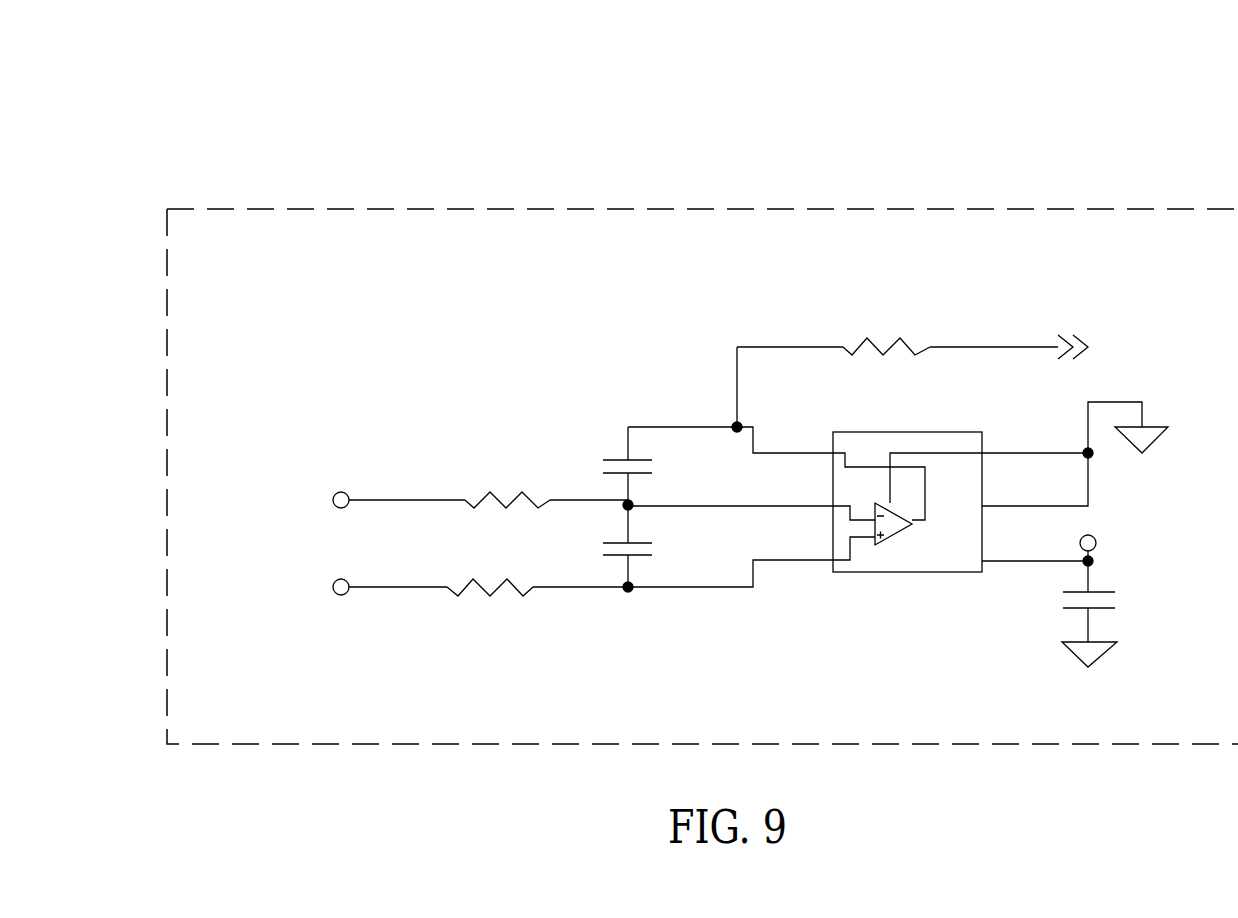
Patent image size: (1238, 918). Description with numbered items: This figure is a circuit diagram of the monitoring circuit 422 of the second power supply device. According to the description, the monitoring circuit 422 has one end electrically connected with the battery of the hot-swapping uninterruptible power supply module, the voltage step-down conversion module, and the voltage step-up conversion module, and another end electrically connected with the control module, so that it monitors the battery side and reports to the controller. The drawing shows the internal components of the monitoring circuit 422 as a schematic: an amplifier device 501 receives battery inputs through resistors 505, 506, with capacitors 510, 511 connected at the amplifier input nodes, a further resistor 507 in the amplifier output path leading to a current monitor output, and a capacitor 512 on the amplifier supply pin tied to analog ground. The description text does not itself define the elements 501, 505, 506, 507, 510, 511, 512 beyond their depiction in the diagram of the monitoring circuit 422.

The monitoring circuit 422 is at (860, 178).
The resistor R505 505 is at (493, 455).
The resistor R506 506 is at (485, 603).
The resistor R507 507 is at (872, 301).
The amplifier U501 501 is at (907, 474).
The capacitor C510 510 is at (657, 546).
The capacitor C511 511 is at (656, 466).
The capacitor C512 512 is at (1129, 596).